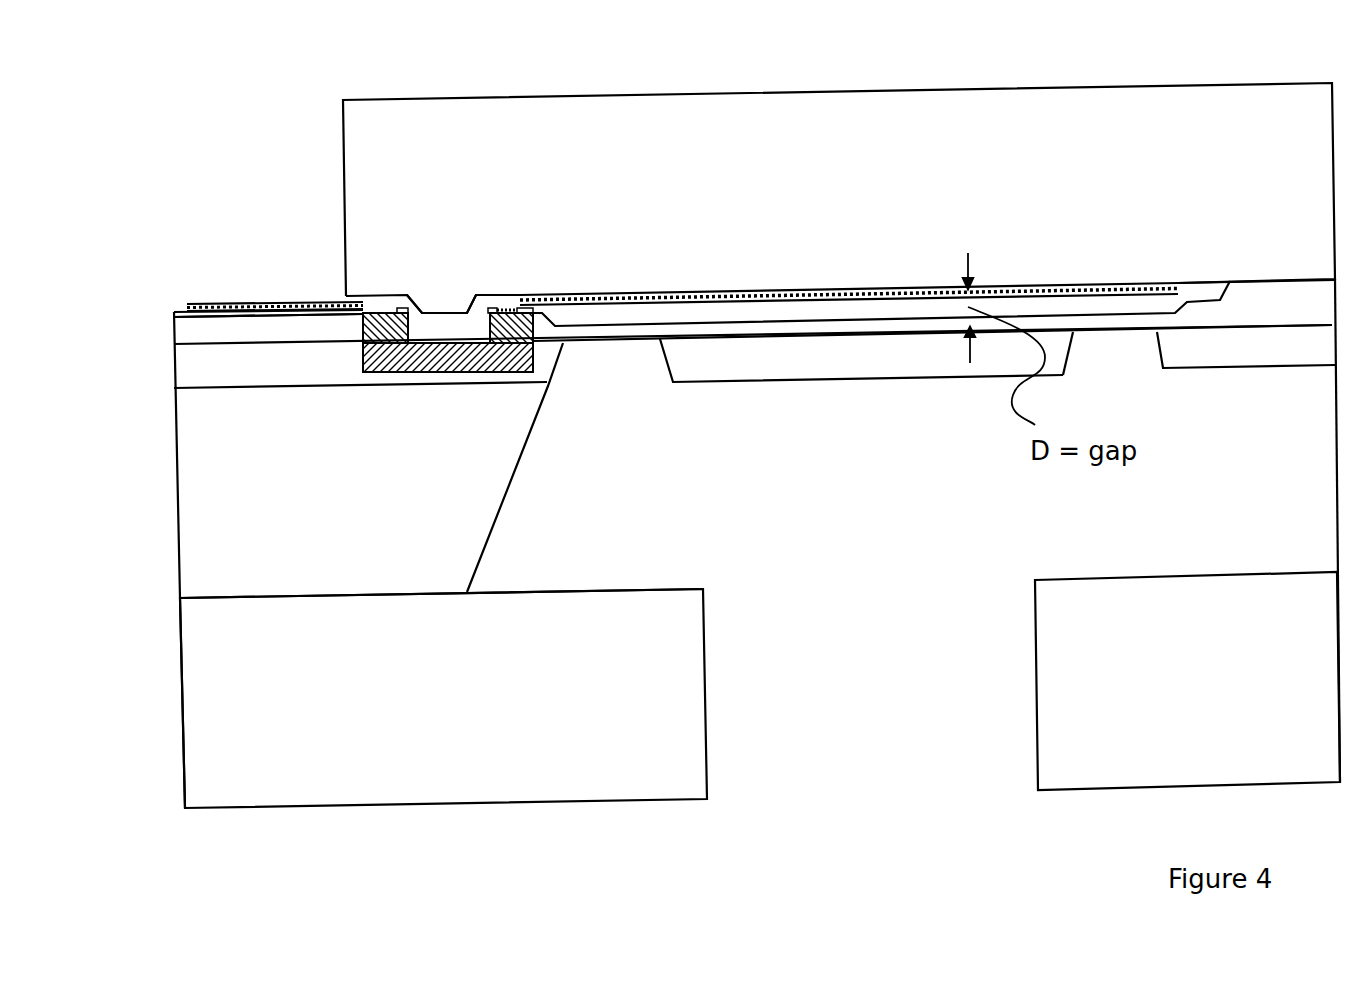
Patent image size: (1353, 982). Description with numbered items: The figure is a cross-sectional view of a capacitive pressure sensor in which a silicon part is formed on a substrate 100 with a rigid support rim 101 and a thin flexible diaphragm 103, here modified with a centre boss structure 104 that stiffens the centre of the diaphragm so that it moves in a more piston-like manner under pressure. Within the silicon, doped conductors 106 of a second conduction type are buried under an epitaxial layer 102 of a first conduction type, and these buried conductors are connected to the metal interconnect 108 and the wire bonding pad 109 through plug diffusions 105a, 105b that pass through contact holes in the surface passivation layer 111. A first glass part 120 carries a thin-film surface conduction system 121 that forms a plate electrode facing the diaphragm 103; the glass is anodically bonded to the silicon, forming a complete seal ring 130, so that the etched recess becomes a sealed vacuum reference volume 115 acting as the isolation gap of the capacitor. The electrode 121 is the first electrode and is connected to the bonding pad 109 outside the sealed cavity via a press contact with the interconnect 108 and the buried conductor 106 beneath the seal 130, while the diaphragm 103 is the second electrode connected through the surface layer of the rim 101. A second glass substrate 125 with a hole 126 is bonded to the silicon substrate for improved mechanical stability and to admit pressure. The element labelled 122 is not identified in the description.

The substrate 100 is at (256, 537).
The rigid support rim 101 is at (274, 382).
The epitaxial layer 102 is at (1233, 312).
The flexible diaphragm 103 is at (863, 333).
The centre boss structure 104 is at (795, 357).
The plug diffusion 105a is at (502, 310).
The plug diffusion 105b is at (373, 307).
The doped conductors 106 is at (467, 352).
The metal interconnect 108 is at (510, 300).
The wire bonding pad 109 is at (210, 306).
The surface passivation layer 111 is at (277, 307).
The sealed vacuum reference volume 115 is at (713, 313).
The first glass part 120 is at (860, 150).
The thin-film surface conduction system 121 is at (757, 287).
The bond contact 122 is at (522, 295).
The second glass substrate 125 is at (647, 660).
The hole 126 is at (887, 703).
The seal ring 130 is at (440, 307).